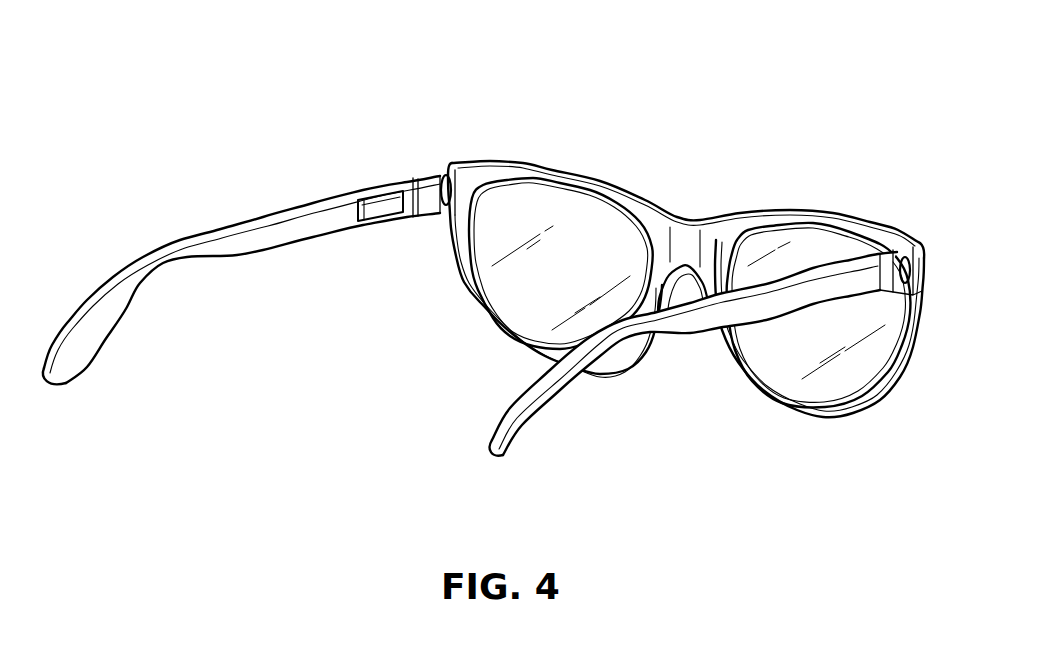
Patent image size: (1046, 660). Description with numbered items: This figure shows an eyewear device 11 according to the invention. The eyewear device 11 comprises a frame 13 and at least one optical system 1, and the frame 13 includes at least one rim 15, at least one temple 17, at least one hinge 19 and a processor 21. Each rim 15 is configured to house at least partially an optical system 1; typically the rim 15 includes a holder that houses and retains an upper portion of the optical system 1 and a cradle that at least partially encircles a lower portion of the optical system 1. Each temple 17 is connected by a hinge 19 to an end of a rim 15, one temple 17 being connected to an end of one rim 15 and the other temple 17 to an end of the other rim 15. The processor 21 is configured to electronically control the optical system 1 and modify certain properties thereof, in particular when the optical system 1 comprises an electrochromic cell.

The eyewear device 11 is at (372, 133).
The frame 13 is at (539, 163).
The optical system 1 is at (597, 228).
The rim 15 is at (476, 335).
The temple 17 is at (80, 350).
The hinge 19 is at (446, 176).
The processor 21 is at (368, 208).